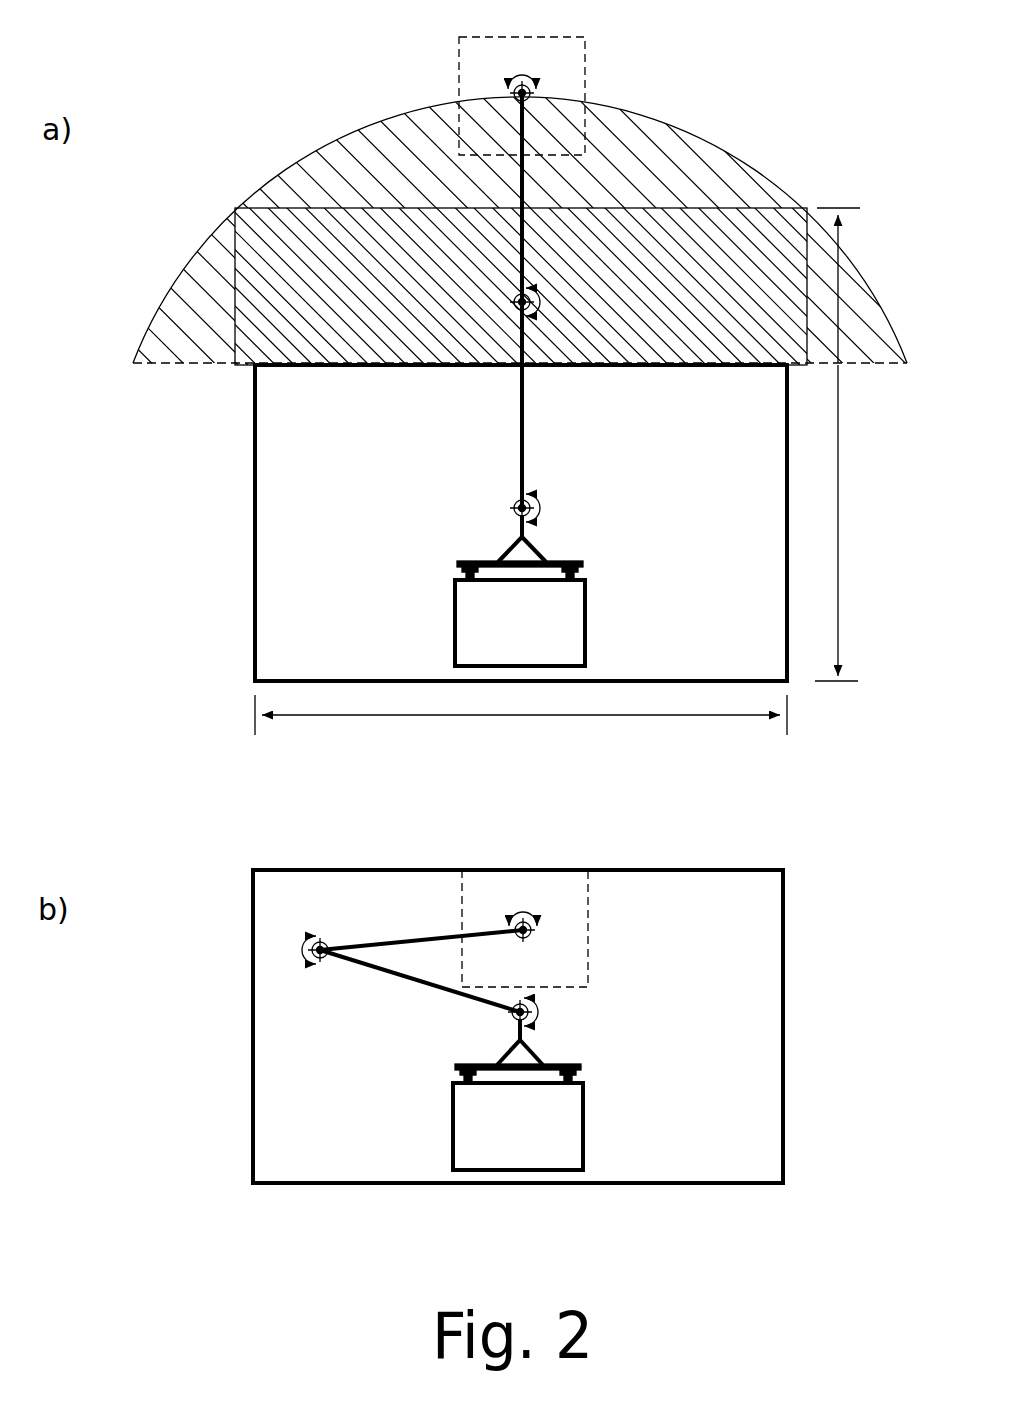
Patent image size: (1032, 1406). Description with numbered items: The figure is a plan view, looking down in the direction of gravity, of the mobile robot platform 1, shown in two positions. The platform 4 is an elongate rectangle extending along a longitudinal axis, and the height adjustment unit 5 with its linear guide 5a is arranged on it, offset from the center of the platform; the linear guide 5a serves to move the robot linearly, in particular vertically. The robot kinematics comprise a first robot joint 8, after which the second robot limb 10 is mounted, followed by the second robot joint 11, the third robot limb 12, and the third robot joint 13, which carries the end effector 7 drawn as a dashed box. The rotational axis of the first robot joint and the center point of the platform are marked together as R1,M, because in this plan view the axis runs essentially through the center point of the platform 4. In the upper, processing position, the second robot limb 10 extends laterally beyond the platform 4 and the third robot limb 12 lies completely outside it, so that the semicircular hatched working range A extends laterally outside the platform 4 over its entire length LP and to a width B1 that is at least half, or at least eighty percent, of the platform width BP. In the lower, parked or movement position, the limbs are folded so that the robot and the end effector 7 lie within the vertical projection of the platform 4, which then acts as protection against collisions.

The mobile robot platform 1 is at (187, 663).
The platform 4 is at (250, 455).
The height adjustment unit 5 is at (590, 615).
The linear guide 5a is at (580, 575).
The end effector 7 is at (590, 920).
The first robot joint 8 is at (536, 506).
The second robot limb 10 is at (524, 440).
The second robot joint 11 is at (520, 310).
The third robot limb 12 is at (523, 186).
The third robot joint 13 is at (511, 91).
The working range A is at (766, 178).
The width of the working range outside the platform B1 is at (843, 318).
The width of the platform BP is at (838, 500).
The length of the platform LP is at (530, 718).
The rotational axis of the first robot joint and center point of the platform R1,M is at (512, 508).